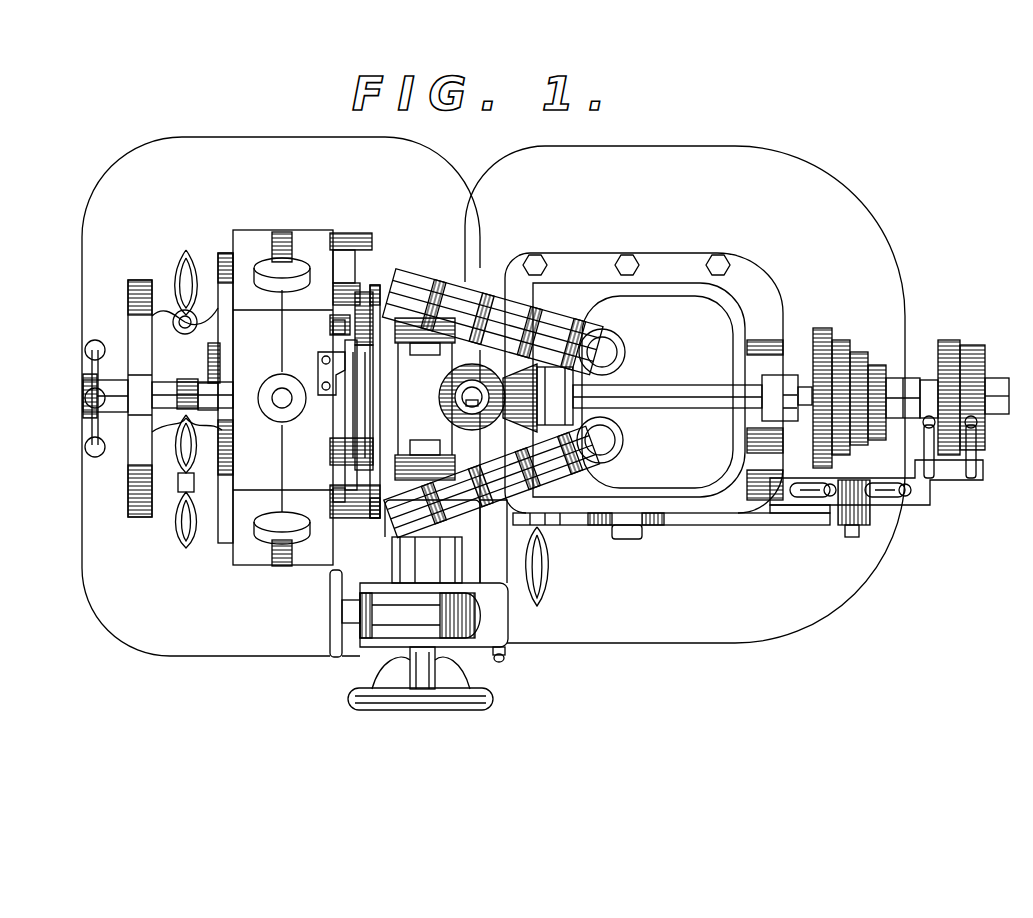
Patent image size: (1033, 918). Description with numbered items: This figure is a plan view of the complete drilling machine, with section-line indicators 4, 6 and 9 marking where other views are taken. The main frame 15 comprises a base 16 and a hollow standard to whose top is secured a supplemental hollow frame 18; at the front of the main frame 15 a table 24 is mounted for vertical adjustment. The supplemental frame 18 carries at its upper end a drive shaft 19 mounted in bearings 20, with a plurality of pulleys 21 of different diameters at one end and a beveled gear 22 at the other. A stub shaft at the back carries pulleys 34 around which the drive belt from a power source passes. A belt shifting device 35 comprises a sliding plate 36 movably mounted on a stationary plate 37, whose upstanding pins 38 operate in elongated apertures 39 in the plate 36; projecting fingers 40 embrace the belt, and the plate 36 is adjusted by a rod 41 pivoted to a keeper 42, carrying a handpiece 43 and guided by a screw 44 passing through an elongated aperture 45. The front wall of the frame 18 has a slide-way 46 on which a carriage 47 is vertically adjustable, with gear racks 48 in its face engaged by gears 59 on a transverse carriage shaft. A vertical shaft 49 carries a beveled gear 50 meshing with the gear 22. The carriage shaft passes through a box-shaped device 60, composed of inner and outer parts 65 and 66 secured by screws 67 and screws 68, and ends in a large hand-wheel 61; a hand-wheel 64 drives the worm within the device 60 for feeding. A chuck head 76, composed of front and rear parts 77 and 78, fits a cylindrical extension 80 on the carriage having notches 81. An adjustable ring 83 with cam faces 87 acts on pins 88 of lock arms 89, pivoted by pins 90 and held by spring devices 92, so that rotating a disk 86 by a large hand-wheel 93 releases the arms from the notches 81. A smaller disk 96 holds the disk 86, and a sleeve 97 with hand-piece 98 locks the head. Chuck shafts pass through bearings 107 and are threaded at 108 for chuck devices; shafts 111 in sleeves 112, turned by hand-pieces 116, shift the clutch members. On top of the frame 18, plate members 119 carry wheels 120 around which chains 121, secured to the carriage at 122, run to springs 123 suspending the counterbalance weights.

The table 24 is at (145, 144).
The main frame 15 is at (706, 147).
The base 16 is at (774, 190).
The supplemental hollow frame 18 is at (688, 275).
The drive shaft 19 is at (660, 392).
The bearings 20 is at (674, 396).
The pulleys 21 is at (858, 352).
The beveled gear 22 is at (520, 372).
The pulleys 34 is at (972, 345).
The belt shifting device 35 is at (876, 481).
The sliding plate 36 is at (805, 499).
The stationary plate 37 is at (784, 512).
The upstanding pins 38 is at (836, 488).
The elongated apertures 39 is at (817, 498).
The projecting fingers 40 is at (970, 465).
The rod 41 is at (690, 526).
The keeper 42 is at (850, 538).
The handpiece 43 is at (548, 578).
The screw 44 is at (632, 541).
The elongated aperture 45 is at (603, 527).
The slide-way 46 is at (441, 460).
The carriage 47 is at (432, 300).
The gear racks 48 is at (440, 343).
The vertical shaft 49 is at (472, 397).
The beveled gear 50 is at (472, 384).
The gears 59 is at (398, 437).
The box-shaped device 60 is at (502, 548).
The hand-wheel 61 is at (478, 706).
The hand-wheel 64 is at (337, 657).
The inner part 65 is at (508, 603).
The outer part 66 is at (506, 650).
The screws 67 is at (462, 553).
The screws 68 is at (500, 662).
The chuck head 76 is at (247, 230).
The front part 77 is at (243, 565).
The rear part 78 is at (330, 522).
The cylindrical extension 80 is at (379, 288).
The notches 81 is at (387, 497).
The adjustable ring 83 is at (343, 278).
The disk 86 is at (226, 253).
The cam faces 87 is at (292, 540).
The pins 88 is at (333, 327).
The lock arms 89 is at (348, 415).
The pins 90 is at (365, 290).
The spring devices 92 is at (322, 355).
The hand-wheel 93 is at (128, 297).
The smaller disk 96 is at (208, 350).
The sleeve 97 is at (87, 443).
The hand-piece 98 is at (86, 353).
The bearings 107 is at (274, 378).
The threaded ends 108 is at (281, 232).
The shafts 111 is at (176, 392).
The sleeves 112 is at (208, 386).
The hand-pieces 116 is at (182, 276).
The plate members 119 is at (438, 288).
The wheels 120 is at (470, 300).
The chains 121 is at (418, 290).
The chain attachment 122 is at (385, 530).
The springs 123 is at (622, 345).
The section line 4 is at (62, 396).
The section line 6 is at (419, 425).
The section line 9 is at (195, 230).